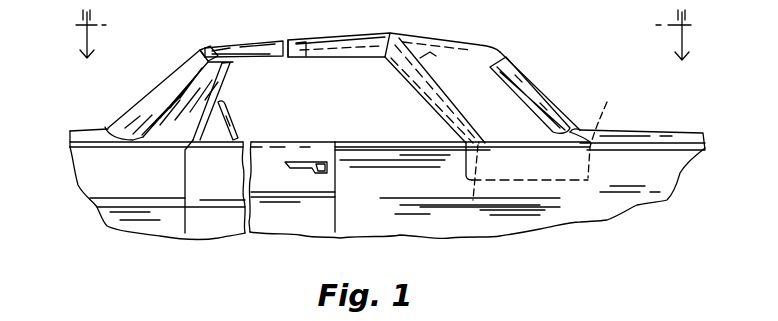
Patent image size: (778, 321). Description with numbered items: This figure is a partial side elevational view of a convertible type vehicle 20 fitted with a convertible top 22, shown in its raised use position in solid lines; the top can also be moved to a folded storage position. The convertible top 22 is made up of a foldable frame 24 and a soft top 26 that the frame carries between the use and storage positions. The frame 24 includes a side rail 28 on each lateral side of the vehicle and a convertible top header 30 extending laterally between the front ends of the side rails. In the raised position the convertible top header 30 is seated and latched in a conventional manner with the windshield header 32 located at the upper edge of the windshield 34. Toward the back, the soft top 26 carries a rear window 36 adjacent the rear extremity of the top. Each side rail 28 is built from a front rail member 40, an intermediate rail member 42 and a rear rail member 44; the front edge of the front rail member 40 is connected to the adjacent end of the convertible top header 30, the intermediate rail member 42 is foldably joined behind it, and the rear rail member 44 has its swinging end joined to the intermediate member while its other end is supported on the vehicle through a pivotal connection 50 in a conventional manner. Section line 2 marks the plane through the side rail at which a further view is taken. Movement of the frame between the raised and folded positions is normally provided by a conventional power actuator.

The section line 2 is at (383, 50).
The convertible type vehicle 20 is at (77, 107).
The convertible top 22 is at (568, 101).
The foldable frame 24 is at (438, 48).
The soft top 26 is at (482, 44).
The side rail 28 is at (303, 44).
The convertible top header 30 is at (210, 40).
The windshield header 32 is at (200, 53).
The windshield 34 is at (128, 111).
The rear window 36 is at (530, 92).
The front rail member 40 is at (262, 38).
The intermediate rail member 42 is at (339, 38).
The rear rail member 44 is at (413, 88).
The pivotal connection 50 is at (473, 200).